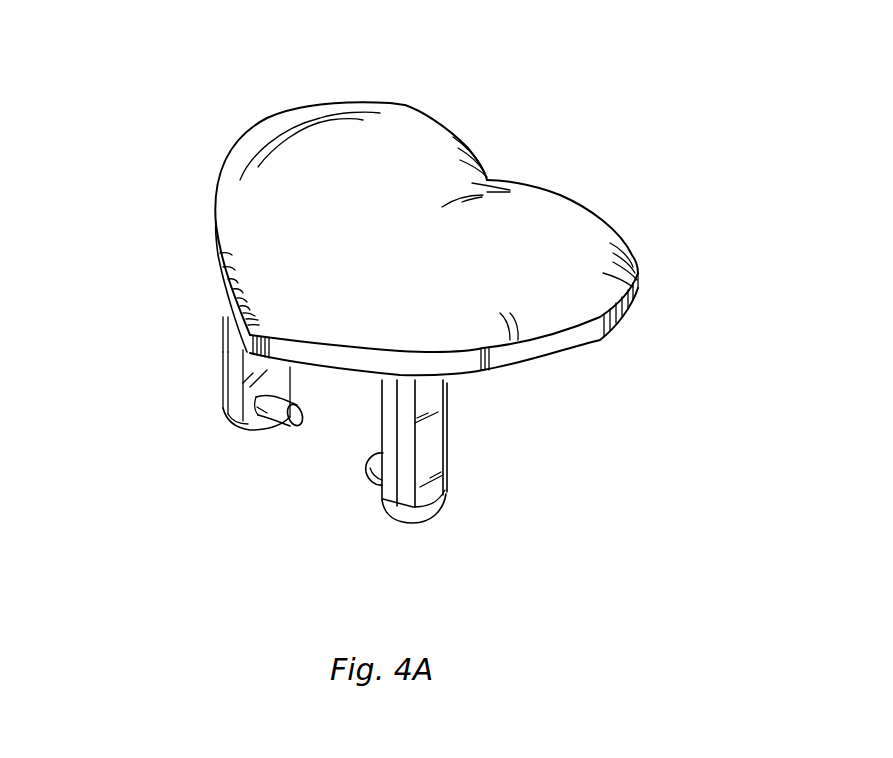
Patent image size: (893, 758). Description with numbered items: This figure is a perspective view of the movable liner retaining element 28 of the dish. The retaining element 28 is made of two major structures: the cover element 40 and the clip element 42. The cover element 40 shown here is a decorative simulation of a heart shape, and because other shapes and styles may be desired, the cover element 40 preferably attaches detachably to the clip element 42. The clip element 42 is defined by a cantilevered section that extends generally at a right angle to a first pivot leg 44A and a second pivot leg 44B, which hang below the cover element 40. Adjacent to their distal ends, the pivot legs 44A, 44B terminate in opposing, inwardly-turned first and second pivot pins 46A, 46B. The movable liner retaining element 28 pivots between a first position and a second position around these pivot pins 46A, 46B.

The movable liner retaining element 28 is at (652, 142).
The cover element 40 is at (405, 118).
The clip element 42 is at (205, 358).
The first pivot leg 44A is at (225, 400).
The second pivot leg 44B is at (430, 443).
The first pivot pin 46A is at (292, 425).
The second pivot pin 46B is at (376, 477).